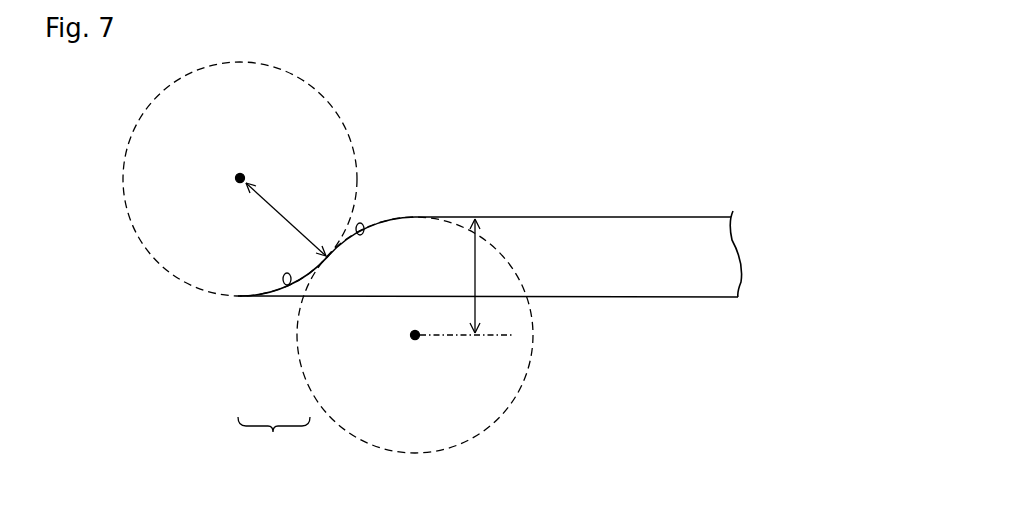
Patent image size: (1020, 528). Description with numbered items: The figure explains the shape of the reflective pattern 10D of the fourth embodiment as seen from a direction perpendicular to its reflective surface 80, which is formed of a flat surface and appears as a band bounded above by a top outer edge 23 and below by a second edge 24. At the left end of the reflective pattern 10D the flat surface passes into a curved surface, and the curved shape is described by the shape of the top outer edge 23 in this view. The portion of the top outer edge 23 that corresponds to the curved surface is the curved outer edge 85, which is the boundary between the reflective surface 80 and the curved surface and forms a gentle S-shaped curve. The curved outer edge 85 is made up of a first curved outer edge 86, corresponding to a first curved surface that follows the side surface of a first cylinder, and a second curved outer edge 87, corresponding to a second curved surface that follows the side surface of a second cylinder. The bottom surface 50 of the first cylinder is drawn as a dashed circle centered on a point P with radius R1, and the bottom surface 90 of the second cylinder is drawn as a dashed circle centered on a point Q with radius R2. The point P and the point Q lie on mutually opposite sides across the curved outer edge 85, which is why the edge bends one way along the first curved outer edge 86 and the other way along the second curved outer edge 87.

The reflective pattern 10D is at (710, 213).
The top outer edge 23 is at (598, 216).
The second surface 24 is at (650, 297).
The reflective surface 80 is at (674, 226).
The curved outer edge 85 is at (274, 440).
The first curved outer edge 86 is at (360, 235).
The second curved outer edge 87 is at (287, 284).
The bottom surface of the second cylinder 90 is at (356, 143).
The bottom surface of the first cylinder 50 is at (530, 380).
The point P is at (415, 340).
The point Q is at (236, 178).
The radius R1 is at (466, 277).
The radius R2 is at (286, 219).